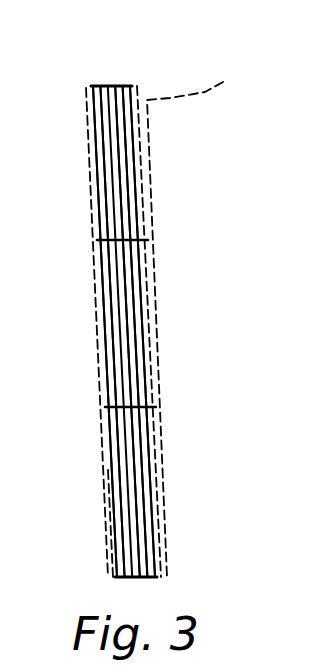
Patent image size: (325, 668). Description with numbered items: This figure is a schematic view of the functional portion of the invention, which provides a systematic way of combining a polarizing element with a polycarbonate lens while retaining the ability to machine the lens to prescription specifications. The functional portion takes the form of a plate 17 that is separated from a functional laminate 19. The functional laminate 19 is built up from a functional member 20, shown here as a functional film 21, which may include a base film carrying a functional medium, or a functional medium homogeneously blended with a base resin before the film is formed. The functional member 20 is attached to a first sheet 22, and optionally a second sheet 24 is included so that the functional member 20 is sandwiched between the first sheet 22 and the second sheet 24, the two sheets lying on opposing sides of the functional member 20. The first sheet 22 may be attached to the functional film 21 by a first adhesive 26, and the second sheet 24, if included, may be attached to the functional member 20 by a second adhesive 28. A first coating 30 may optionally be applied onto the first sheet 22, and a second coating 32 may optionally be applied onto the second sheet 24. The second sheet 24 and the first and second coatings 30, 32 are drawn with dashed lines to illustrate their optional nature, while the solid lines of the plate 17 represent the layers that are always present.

The plate 17 is at (150, 263).
The functional laminate 19 is at (99, 457).
The functional member 20 is at (121, 151).
The functional film 21 is at (117, 87).
The first sheet 22 is at (95, 87).
The second sheet 24 is at (128, 86).
The first adhesive 26 is at (107, 87).
The second adhesive 28 is at (122, 85).
The first coating 30 is at (90, 88).
The second coating 32 is at (203, 318).